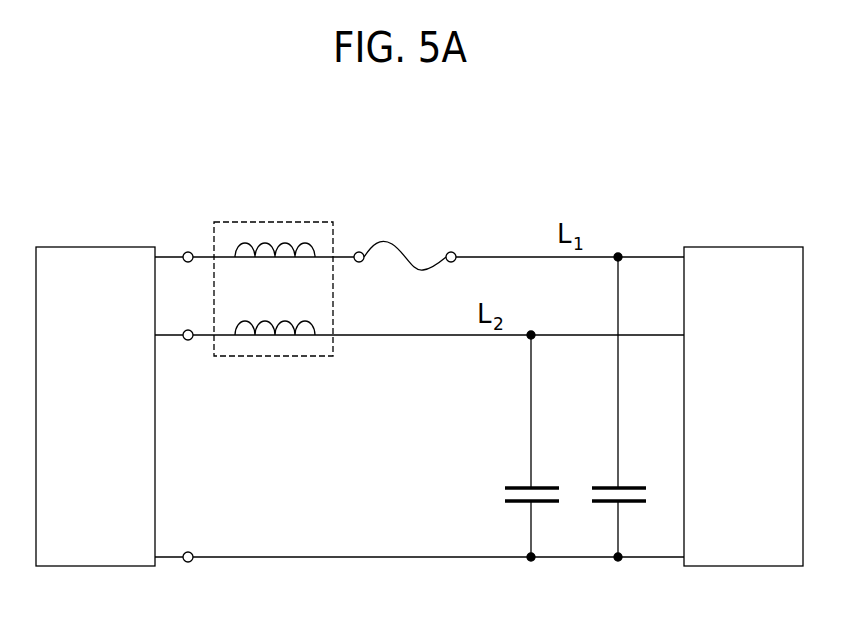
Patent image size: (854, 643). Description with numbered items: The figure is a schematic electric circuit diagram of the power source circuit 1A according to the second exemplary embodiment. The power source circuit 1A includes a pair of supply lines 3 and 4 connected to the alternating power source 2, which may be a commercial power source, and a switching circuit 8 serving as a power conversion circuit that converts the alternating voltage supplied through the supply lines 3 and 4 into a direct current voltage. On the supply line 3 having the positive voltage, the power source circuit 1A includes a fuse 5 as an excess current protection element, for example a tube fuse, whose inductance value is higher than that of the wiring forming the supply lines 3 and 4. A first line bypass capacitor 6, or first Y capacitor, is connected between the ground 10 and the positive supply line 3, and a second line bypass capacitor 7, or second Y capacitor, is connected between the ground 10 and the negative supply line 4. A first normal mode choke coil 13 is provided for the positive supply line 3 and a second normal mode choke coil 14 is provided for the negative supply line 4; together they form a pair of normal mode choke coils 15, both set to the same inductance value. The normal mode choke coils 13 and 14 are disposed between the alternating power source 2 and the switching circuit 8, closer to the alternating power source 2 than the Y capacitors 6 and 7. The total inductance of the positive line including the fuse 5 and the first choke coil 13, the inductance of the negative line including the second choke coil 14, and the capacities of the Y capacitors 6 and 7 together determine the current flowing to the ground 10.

The power source circuit 1A is at (524, 174).
The alternating power source 2 is at (86, 247).
The supply line 3 is at (172, 257).
The supply line 4 is at (169, 336).
The fuse 5 is at (380, 243).
The first line bypass capacitor 6 is at (630, 503).
The second line bypass capacitor 7 is at (543, 503).
The switching circuit 8 is at (745, 247).
The ground 10 is at (252, 558).
The first normal mode choke coil 13 is at (251, 243).
The second normal mode choke coil 14 is at (258, 337).
The pair of normal mode choke coils 15 is at (290, 222).